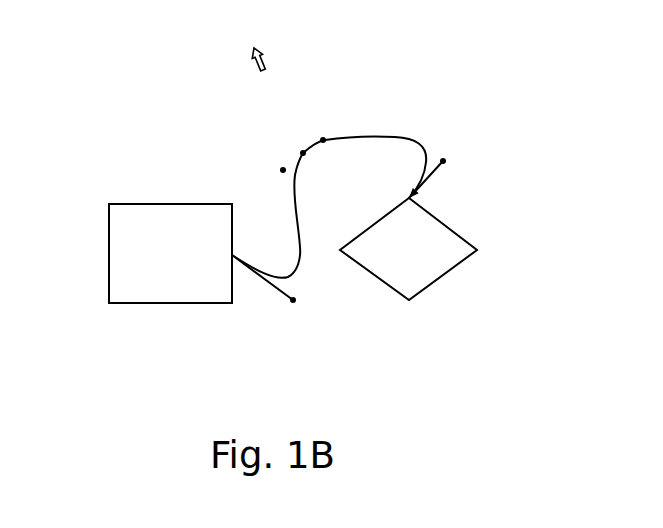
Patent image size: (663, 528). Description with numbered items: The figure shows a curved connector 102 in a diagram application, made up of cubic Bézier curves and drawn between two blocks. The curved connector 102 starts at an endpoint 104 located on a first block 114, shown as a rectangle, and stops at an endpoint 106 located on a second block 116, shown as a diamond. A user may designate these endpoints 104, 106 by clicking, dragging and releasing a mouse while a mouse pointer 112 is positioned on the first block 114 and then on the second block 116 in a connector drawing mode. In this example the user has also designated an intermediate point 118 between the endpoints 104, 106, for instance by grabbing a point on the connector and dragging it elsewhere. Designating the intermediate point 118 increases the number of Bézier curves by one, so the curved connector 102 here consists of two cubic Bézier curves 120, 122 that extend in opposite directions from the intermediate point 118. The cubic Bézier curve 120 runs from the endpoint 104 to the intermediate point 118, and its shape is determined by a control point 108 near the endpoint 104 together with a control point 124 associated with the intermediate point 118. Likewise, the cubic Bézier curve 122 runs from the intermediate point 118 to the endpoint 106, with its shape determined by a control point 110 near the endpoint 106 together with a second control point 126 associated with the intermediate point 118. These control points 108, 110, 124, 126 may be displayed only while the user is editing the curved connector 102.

The curved connector 102 is at (360, 58).
The endpoint 104 is at (232, 255).
The endpoint 106 is at (416, 247).
The control point 108 is at (293, 300).
The control point 110 is at (443, 161).
The mouse pointer 112 is at (252, 63).
The first block 114 is at (169, 204).
The second block 116 is at (437, 282).
The intermediate point 118 is at (303, 153).
The cubic Bézier curve 120 is at (300, 247).
The cubic Bézier curve 122 is at (393, 137).
The control point 124 is at (283, 170).
The control point 126 is at (323, 140).